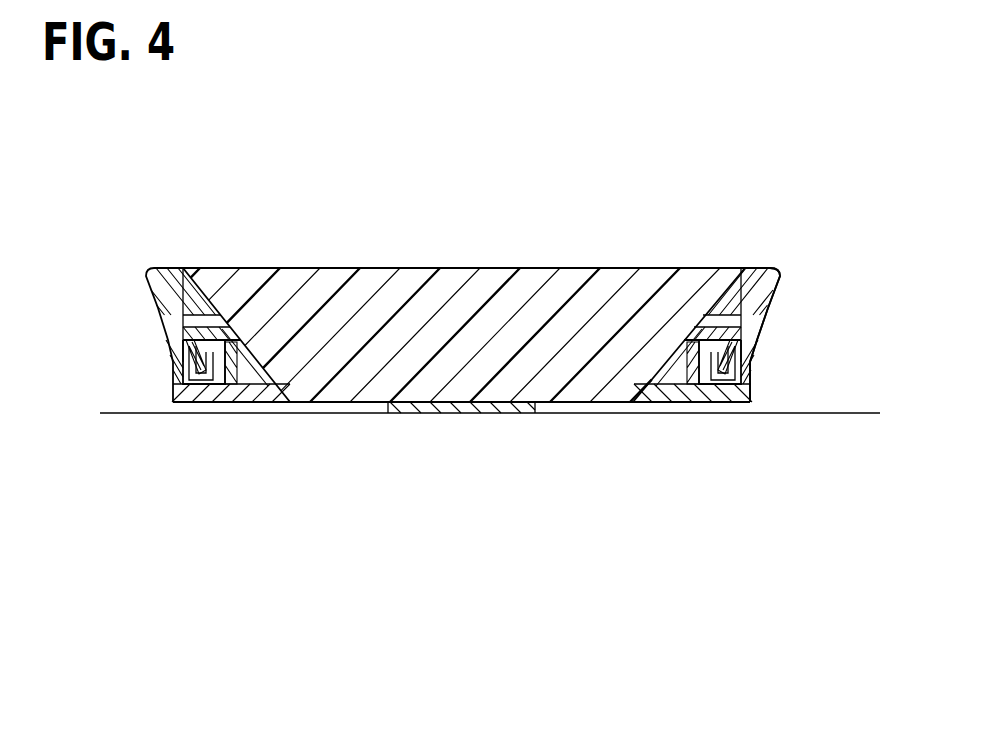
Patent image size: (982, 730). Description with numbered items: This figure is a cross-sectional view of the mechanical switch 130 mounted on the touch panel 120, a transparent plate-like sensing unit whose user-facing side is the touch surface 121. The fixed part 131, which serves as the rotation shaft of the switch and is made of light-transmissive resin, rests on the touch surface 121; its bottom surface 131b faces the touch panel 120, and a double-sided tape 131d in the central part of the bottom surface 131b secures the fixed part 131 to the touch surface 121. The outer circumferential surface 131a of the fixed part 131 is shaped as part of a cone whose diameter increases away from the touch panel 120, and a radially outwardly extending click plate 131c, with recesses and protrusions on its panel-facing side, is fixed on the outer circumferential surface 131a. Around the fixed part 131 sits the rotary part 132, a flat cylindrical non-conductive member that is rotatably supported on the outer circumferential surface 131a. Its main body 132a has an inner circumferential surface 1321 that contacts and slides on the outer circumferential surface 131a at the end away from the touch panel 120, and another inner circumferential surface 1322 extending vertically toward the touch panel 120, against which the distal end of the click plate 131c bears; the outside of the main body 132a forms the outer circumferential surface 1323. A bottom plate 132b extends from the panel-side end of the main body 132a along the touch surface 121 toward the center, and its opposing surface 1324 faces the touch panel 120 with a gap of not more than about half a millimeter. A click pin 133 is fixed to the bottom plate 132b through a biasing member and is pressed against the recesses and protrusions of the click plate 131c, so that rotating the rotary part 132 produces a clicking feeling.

The mechanical switch 130 is at (352, 259).
The fixed part 131 is at (273, 267).
The outer circumferential surface 131a is at (177, 310).
The bottom surface 131b is at (324, 404).
The click plate 131c is at (193, 328).
The double-sided tape 131d is at (422, 404).
The click pin 133 is at (187, 367).
The rotary part 132 is at (781, 263).
The inner circumferential surface 1321 is at (743, 267).
The inner circumferential surface 1322 is at (740, 302).
The outer circumferential surface 1323 is at (762, 325).
The opposing surface 1324 is at (723, 402).
The main body 132a is at (767, 290).
The bottom plate 132b is at (672, 398).
The touch panel 120 is at (481, 440).
The touch surface 121 is at (150, 413).